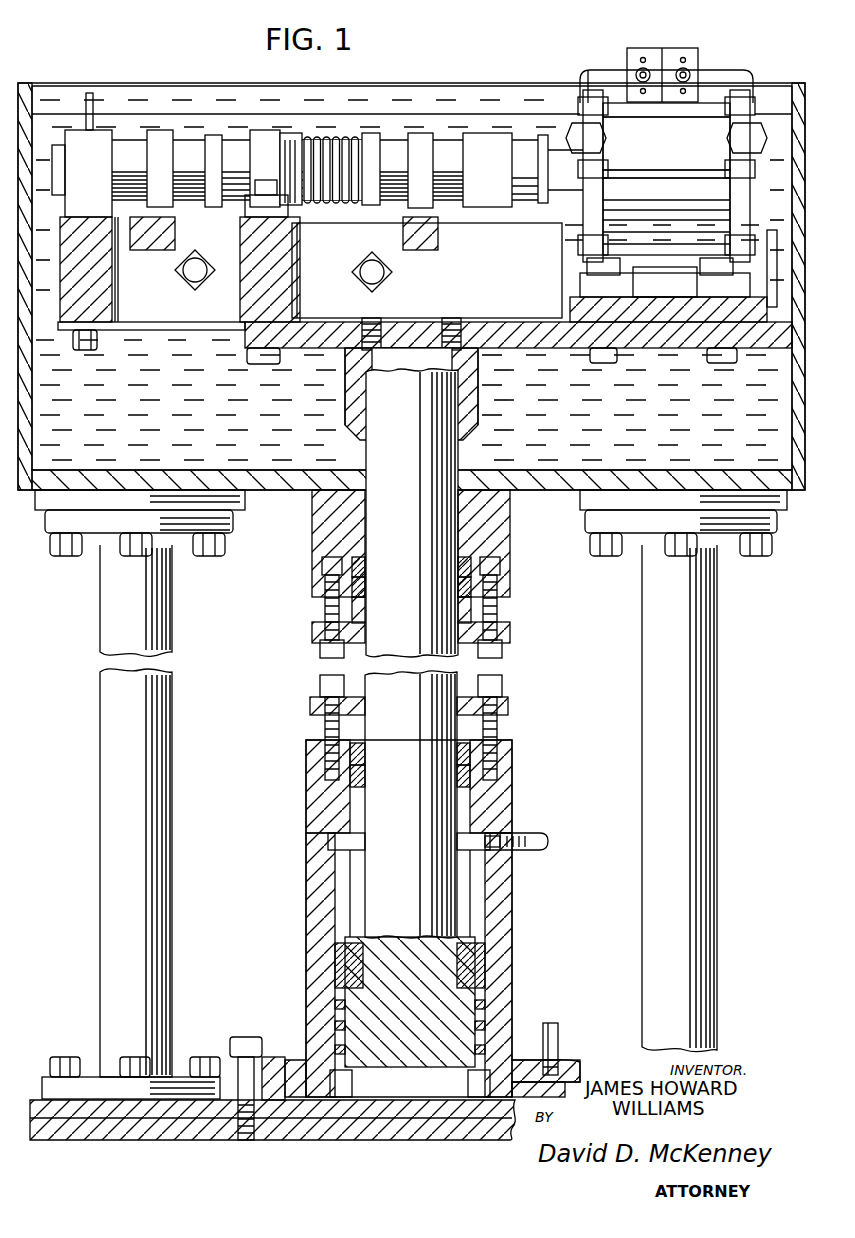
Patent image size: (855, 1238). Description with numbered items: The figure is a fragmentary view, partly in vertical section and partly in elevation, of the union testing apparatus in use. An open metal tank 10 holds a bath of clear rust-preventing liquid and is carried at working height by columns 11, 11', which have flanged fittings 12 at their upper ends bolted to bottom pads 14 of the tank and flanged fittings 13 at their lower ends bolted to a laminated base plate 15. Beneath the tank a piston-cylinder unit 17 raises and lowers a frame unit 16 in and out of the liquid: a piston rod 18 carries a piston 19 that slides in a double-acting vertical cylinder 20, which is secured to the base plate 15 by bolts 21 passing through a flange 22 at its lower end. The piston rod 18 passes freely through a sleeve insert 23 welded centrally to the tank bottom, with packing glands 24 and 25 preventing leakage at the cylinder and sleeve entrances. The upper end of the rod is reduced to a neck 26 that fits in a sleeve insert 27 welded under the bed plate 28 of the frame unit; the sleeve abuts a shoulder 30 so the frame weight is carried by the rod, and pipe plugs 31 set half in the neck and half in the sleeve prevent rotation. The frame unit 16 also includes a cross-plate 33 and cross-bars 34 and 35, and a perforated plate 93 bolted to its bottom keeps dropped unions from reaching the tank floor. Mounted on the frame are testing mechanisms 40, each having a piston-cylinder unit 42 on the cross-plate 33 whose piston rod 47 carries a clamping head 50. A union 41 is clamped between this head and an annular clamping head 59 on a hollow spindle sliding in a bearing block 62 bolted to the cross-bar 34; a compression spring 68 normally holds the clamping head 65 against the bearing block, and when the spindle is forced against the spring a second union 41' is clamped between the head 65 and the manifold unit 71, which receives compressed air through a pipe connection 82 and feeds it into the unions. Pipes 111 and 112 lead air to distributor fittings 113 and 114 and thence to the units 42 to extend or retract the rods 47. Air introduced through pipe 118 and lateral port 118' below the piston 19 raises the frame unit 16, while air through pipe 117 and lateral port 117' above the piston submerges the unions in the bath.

The tank 10 is at (265, 497).
The columns 11 is at (112, 811).
The column 11' is at (705, 798).
The flanged fitting 12 is at (50, 540).
The flanged fitting 13 is at (42, 1080).
The bottom pad 14 is at (245, 512).
The base plate 15 is at (80, 1140).
The frame unit 16 is at (486, 287).
The piston-cylinder unit 17 is at (295, 815).
The piston rod 18 is at (411, 654).
The piston 19 is at (480, 990).
The cylinder 20 is at (305, 875).
The bolts 21 is at (243, 1040).
The flange 22 is at (305, 1060).
The sleeve insert 23 is at (512, 580).
The packing gland 24 is at (508, 703).
The packing gland 25 is at (512, 630).
The neck 26 is at (411, 394).
The sleeve insert 27 is at (480, 412).
The bed plate 28 is at (535, 350).
The shoulder 30 is at (345, 415).
The pipe plugs 31 is at (450, 318).
The cross-plate 33 is at (565, 318).
The cross-bar 34 is at (305, 265).
The cross-bar 35 is at (105, 290).
The testing mechanism 40 is at (486, 135).
The union 41 is at (347, 146).
The union 41' is at (172, 147).
The piston-cylinder unit 42 is at (682, 148).
The piston rod 47 is at (535, 200).
The clamping head 50 is at (487, 170).
The clamping head 59 is at (370, 207).
The bearing block 62 is at (265, 138).
The clamping head 65 is at (215, 207).
The compression spring 68 is at (335, 140).
The manifold unit 71 is at (82, 173).
The pipe connection 82 is at (86, 100).
The perforated plate 93 is at (155, 322).
The pipe 111 is at (748, 68).
The pipe 112 is at (598, 70).
The fluid pressure distributor fitting 113 is at (690, 35).
The fluid pressure distributor fitting 114 is at (640, 52).
The pipe 117 is at (533, 858).
The lateral port 117' is at (531, 814).
The pipe 118 is at (580, 1044).
The lateral port 118' is at (560, 1030).